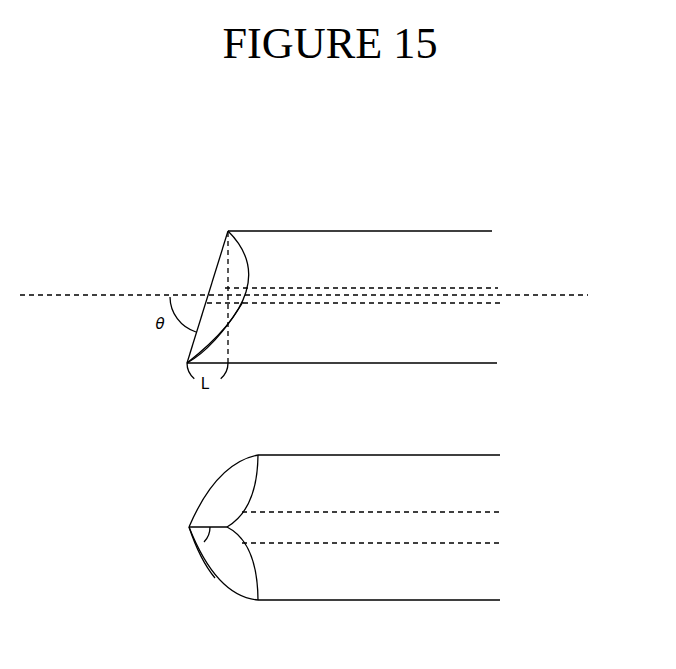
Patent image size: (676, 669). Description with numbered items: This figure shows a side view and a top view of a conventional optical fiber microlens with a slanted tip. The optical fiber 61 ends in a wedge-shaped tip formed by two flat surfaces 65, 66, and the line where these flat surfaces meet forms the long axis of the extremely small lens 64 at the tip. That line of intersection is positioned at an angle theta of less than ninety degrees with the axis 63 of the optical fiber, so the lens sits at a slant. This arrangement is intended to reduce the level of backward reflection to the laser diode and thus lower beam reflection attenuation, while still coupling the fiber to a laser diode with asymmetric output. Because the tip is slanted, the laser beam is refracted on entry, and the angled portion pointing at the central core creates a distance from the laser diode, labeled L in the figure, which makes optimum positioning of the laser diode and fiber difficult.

The optical fiber 61 is at (439, 221).
The axis of the optical fiber 63 is at (40, 296).
The extremely small lens 64 is at (187, 364).
The flat surface 65 is at (225, 288).
The flat surface 66 is at (213, 492).